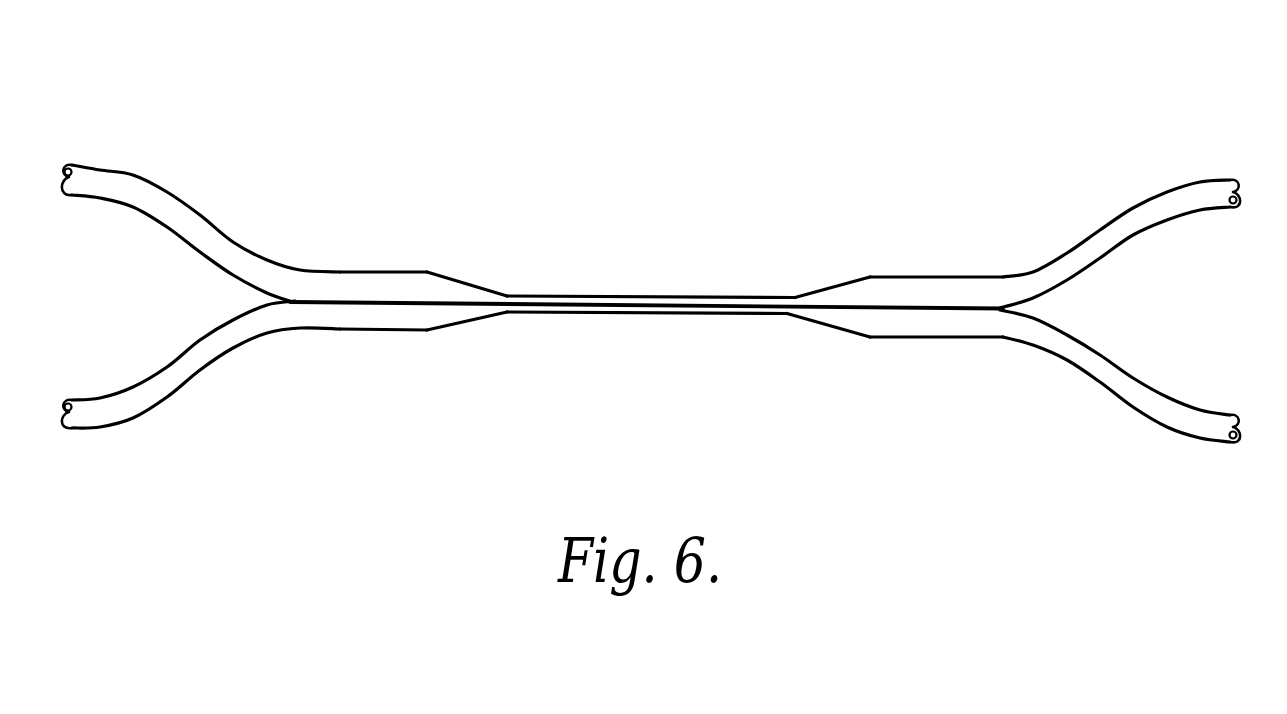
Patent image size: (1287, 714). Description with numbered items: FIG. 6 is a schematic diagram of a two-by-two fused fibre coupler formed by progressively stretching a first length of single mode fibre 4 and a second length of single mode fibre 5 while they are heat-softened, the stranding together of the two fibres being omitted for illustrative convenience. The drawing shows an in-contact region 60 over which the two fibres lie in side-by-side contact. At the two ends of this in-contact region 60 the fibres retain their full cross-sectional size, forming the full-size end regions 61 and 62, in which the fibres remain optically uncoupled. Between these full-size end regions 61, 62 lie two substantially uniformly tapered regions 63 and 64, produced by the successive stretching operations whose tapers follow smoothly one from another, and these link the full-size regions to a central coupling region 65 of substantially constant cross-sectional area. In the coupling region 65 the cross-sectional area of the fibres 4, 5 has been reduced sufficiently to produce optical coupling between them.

The first length of single mode fibre 4 is at (112, 185).
The second length of single mode fibre 5 is at (128, 405).
The in-contact region 60 is at (632, 305).
The full-size end region 61 is at (353, 283).
The full-size end region 62 is at (933, 292).
The tapered region 63 is at (457, 292).
The tapered region 64 is at (833, 295).
The coupling region 65 is at (698, 302).